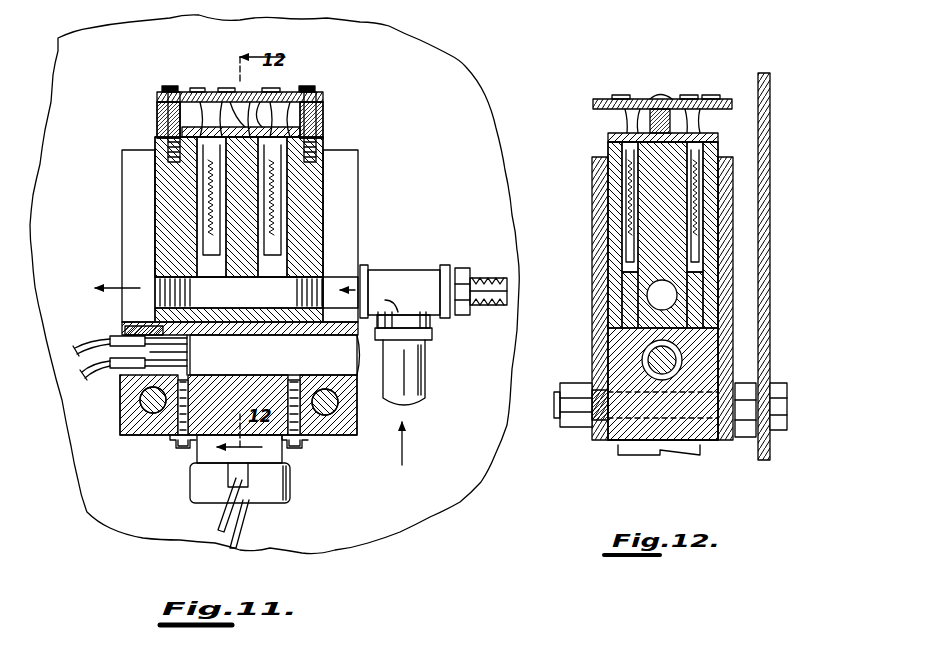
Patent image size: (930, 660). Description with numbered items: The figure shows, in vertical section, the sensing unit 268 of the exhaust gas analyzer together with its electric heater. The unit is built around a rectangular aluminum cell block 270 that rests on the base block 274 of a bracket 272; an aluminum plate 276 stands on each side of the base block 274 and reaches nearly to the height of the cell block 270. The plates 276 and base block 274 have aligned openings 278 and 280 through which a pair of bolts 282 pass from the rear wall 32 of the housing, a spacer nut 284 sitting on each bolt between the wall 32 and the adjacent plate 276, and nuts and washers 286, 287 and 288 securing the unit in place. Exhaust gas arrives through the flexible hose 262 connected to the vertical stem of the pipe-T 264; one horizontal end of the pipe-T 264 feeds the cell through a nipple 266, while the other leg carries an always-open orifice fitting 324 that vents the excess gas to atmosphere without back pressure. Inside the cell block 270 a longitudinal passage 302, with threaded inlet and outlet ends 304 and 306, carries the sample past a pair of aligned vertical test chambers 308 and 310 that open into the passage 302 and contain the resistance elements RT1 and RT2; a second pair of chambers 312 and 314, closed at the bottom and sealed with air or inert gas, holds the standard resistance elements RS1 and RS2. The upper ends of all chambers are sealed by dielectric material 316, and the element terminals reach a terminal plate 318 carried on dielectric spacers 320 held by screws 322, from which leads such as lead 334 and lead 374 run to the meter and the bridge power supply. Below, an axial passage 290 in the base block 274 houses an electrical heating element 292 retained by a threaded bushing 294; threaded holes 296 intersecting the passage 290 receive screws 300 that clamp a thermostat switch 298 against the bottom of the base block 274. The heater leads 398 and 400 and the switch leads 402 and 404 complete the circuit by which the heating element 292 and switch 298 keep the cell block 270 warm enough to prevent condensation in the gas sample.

In FIG. 11, the rear wall 32 is at (436, 505).
In FIG. 12, the rear wall 32 is at (770, 102).
In FIG. 11, the flexible hose 262 is at (426, 366).
In FIG. 11, the pipe-T 264 is at (402, 270).
In FIG. 11, the nipple 266 is at (340, 270).
In FIG. 11, the sensing unit 268 is at (350, 123).
In FIG. 12, the sensing unit 268 is at (588, 128).
In FIG. 11, the cell block 270 is at (322, 205).
In FIG. 12, the cell block 270 is at (608, 160).
In FIG. 11, the bracket 272 is at (370, 246).
In FIG. 12, the bracket 272 is at (642, 462).
In FIG. 11, the base block 274 is at (125, 436).
In FIG. 12, the base block 274 is at (718, 445).
In FIG. 11, the aluminum plate 276 is at (357, 168).
In FIG. 12, the aluminum plate 276 is at (598, 262).
In FIG. 12, the openings 278 is at (703, 396).
In FIG. 11, the openings 280 is at (122, 430).
In FIG. 12, the openings 280 is at (662, 458).
In FIG. 11, the bolts 282 is at (140, 400).
In FIG. 12, the spacer nut 284 is at (760, 432).
In FIG. 12, the nuts 286 is at (575, 386).
In FIG. 12, the nut 287 is at (780, 385).
In FIG. 12, the washers 288 is at (578, 430).
In FIG. 11, the axial passage 290 is at (248, 338).
In FIG. 12, the axial passage 290 is at (680, 360).
In FIG. 11, the electrical heating element 292 is at (357, 372).
In FIG. 12, the electrical heating element 292 is at (648, 356).
In FIG. 11, the threaded bushing 294 is at (124, 330).
In FIG. 11, the threaded holes 296 is at (300, 380).
In FIG. 11, the thermostat switch 298 is at (291, 487).
In FIG. 12, the thermostat switch 298 is at (616, 455).
In FIG. 11, the screws 300 is at (170, 445).
In FIG. 11, the longitudinal passage 302 is at (222, 336).
In FIG. 12, the longitudinal passage 302 is at (650, 302).
In FIG. 11, the inlet end 304 is at (282, 262).
In FIG. 11, the outlet end 306 is at (152, 280).
In FIG. 11, the test chamber 308 is at (239, 299).
In FIG. 11, the test chamber 310 is at (241, 292).
In FIG. 12, the chamber 312 is at (725, 168).
In FIG. 12, the chamber 314 is at (624, 205).
In FIG. 11, the dielectric material 316 is at (298, 130).
In FIG. 12, the dielectric material 316 is at (620, 95).
In FIG. 11, the terminal plate 318 is at (298, 92).
In FIG. 12, the terminal plate 318 is at (600, 99).
In FIG. 11, the spacers 320 is at (158, 112).
In FIG. 12, the spacers 320 is at (655, 113).
In FIG. 11, the screws 322 is at (165, 92).
In FIG. 12, the screws 322 is at (662, 95).
In FIG. 11, the orifice fitting 324 is at (482, 276).
In FIG. 11, the lead 334 is at (200, 90).
In FIG. 12, the lead 334 is at (720, 95).
In FIG. 11, the lead 374 is at (170, 88).
In FIG. 12, the lead 374 is at (690, 95).
In FIG. 11, the lead 398 is at (75, 348).
In FIG. 11, the lead 400 is at (108, 368).
In FIG. 11, the lead 402 is at (216, 514).
In FIG. 11, the lead 404 is at (243, 522).
In FIG. 11, the resistance element RT1 is at (280, 185).
In FIG. 11, the resistance element RT2 is at (218, 208).
In FIG. 12, the resistance element RS1 is at (692, 226).
In FIG. 12, the resistance element RS2 is at (636, 190).